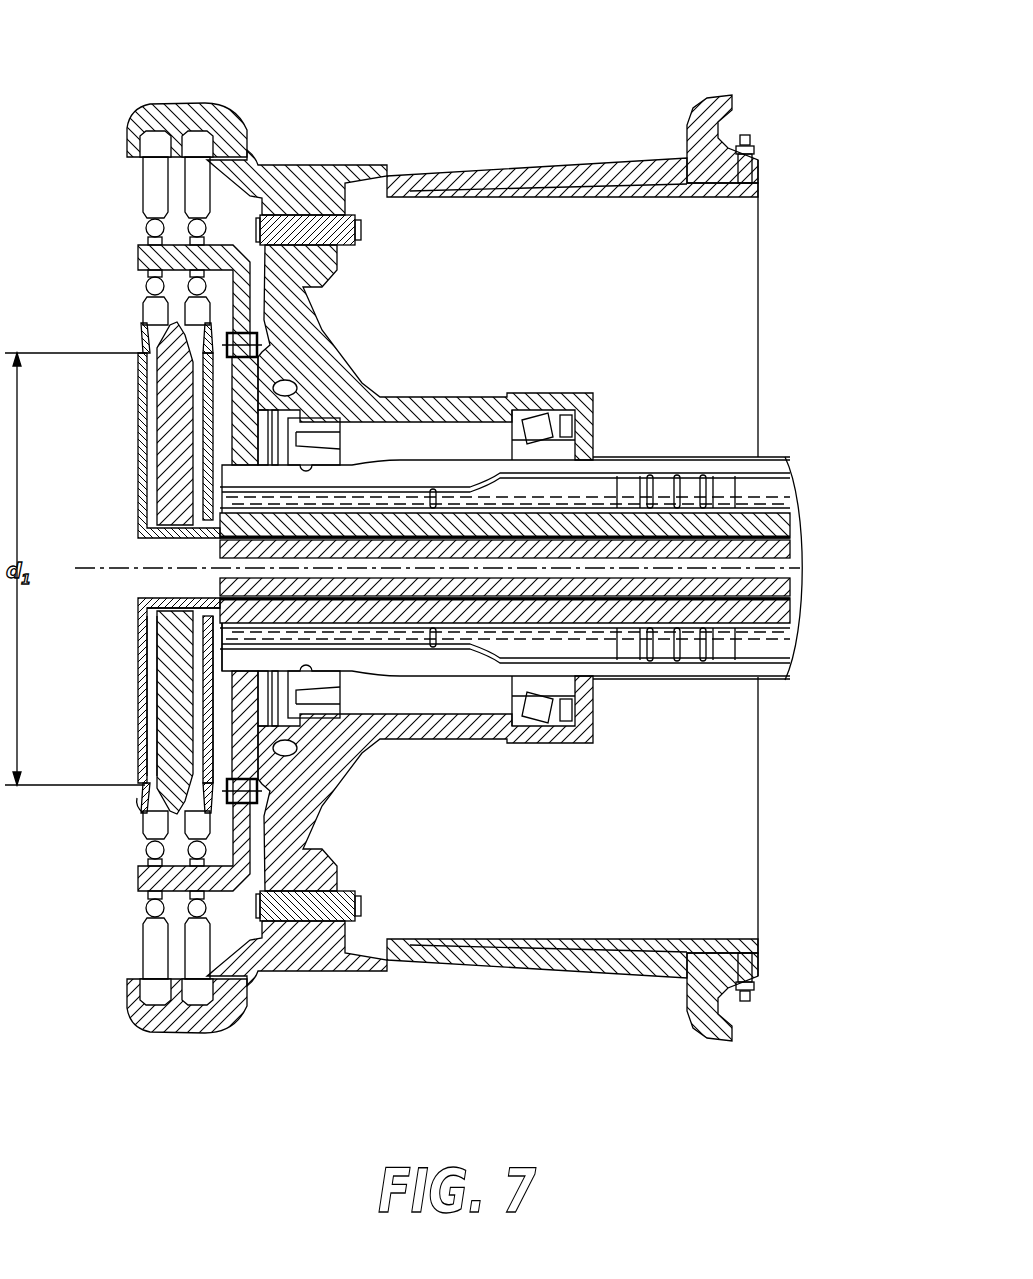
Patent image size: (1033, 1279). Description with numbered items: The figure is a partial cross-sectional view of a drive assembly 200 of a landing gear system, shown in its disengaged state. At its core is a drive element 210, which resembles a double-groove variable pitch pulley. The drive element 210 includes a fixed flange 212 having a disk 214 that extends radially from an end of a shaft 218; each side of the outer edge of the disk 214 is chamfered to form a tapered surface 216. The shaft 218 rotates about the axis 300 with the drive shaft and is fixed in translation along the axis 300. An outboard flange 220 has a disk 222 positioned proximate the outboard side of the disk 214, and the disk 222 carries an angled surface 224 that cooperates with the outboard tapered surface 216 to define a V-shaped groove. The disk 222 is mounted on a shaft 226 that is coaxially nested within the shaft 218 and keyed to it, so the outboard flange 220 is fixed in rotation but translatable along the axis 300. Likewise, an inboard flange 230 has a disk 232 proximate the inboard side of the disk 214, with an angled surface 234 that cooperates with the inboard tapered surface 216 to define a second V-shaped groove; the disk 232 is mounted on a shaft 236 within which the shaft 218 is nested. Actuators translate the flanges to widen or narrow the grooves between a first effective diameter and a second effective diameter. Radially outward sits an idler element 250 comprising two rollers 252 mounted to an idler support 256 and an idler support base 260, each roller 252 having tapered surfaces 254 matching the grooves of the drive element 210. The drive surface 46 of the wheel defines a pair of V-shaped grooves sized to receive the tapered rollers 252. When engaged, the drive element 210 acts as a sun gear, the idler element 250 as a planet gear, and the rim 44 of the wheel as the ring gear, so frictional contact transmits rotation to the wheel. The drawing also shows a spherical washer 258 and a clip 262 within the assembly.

The drive assembly 200 is at (92, 96).
The rim 44 is at (327, 165).
The drive surface 46 is at (148, 148).
The drive element 210 is at (130, 526).
The fixed flange 212 is at (154, 678).
The disk 214 is at (160, 715).
The tapered surface 216 is at (158, 781).
The shaft 218 is at (764, 614).
The outboard flange 220 is at (135, 650).
The disk 222 is at (204, 700).
The angled surface 224 is at (145, 812).
The shaft 226 is at (173, 598).
The inboard flange 230 is at (221, 728).
The disk 232 is at (213, 744).
The angled surface 234 is at (212, 814).
The shaft 236 is at (783, 628).
The idler element 250 is at (128, 232).
The roller 252 is at (147, 187).
The tapered surface 254 is at (140, 150).
The idler support 256 is at (137, 254).
The spherical washer 258 is at (152, 285).
The idler support base 260 is at (268, 384).
The clip 262 is at (237, 345).
The axis 300 is at (767, 570).